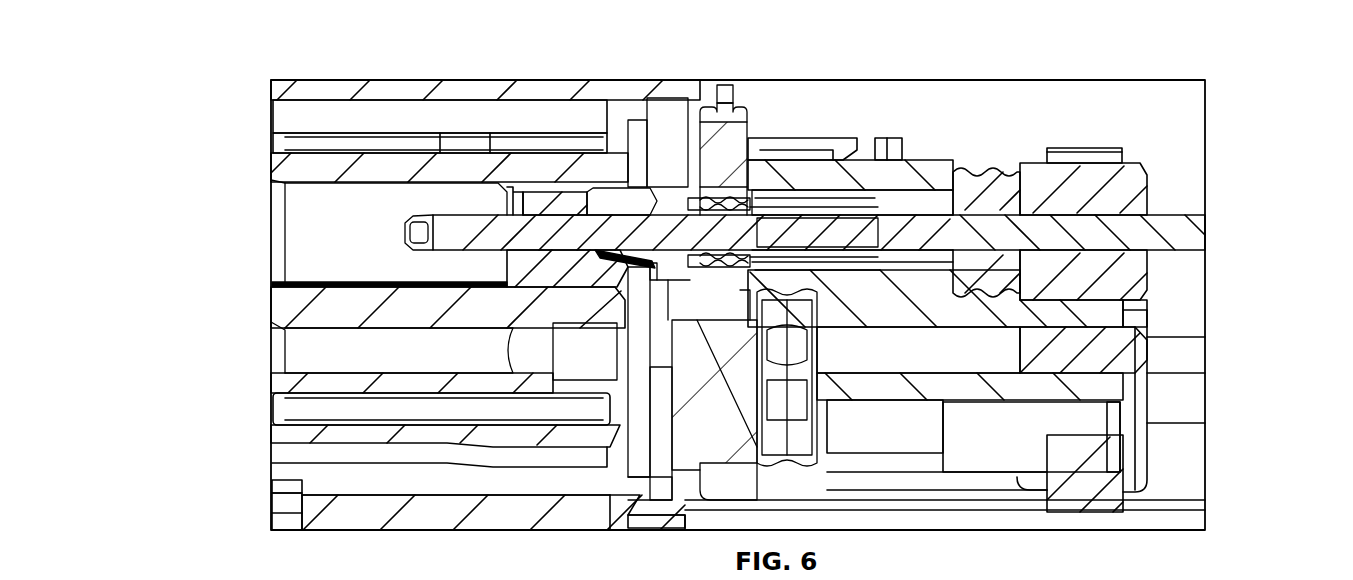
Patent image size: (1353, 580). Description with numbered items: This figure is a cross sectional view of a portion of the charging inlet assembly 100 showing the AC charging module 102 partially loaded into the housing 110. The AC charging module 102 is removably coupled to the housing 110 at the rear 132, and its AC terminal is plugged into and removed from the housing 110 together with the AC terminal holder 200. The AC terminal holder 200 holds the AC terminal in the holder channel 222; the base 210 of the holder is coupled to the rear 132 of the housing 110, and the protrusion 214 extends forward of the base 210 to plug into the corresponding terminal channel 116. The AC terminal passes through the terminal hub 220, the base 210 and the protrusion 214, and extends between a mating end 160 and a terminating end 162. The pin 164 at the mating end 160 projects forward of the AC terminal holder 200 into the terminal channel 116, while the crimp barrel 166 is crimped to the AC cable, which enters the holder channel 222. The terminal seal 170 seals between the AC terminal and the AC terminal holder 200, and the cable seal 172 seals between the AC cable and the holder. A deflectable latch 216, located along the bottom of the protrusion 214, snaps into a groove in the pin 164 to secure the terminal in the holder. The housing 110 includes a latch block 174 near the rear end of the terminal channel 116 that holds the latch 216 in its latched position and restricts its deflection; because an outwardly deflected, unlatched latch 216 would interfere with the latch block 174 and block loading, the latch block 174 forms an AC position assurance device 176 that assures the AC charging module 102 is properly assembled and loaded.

The charging inlet assembly 100 is at (1022, 50).
The AC charging module 102 is at (980, 128).
The housing 110 is at (540, 86).
The terminal channel 116 is at (322, 266).
The rear 132 is at (670, 120).
The mating end 160 is at (397, 230).
The terminating end 162 is at (895, 200).
The pin 164 is at (480, 226).
The crimp barrel 166 is at (858, 200).
The terminal seal 170 is at (725, 200).
The cable seal 172 is at (1010, 168).
The latch block 174 is at (547, 250).
The AC position assurance device 176 is at (558, 260).
The AC terminal holder 200 is at (912, 165).
The base 210 is at (690, 272).
The protrusion 214 is at (650, 185).
The latch 216 is at (618, 262).
The terminal hub 220 is at (885, 387).
The holder channel 222 is at (903, 193).